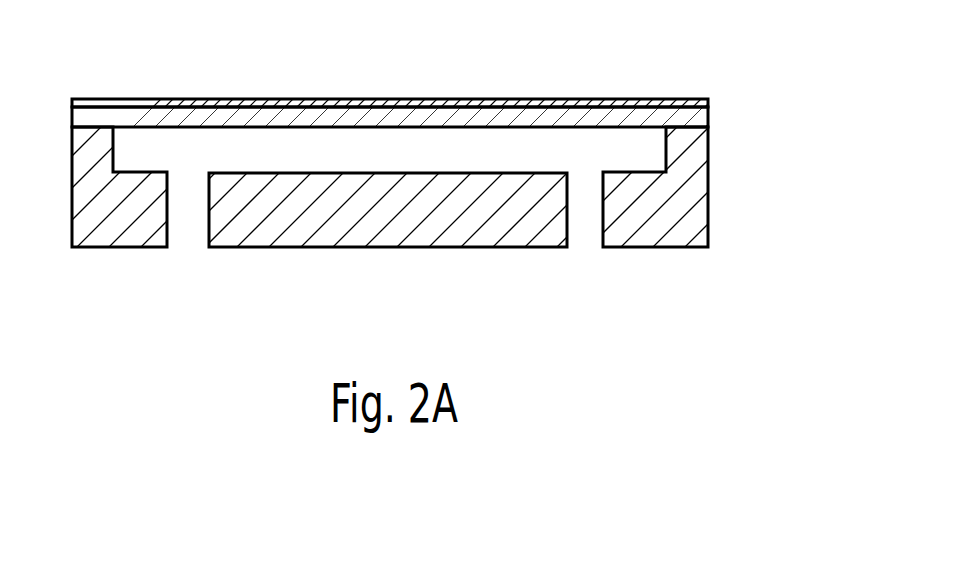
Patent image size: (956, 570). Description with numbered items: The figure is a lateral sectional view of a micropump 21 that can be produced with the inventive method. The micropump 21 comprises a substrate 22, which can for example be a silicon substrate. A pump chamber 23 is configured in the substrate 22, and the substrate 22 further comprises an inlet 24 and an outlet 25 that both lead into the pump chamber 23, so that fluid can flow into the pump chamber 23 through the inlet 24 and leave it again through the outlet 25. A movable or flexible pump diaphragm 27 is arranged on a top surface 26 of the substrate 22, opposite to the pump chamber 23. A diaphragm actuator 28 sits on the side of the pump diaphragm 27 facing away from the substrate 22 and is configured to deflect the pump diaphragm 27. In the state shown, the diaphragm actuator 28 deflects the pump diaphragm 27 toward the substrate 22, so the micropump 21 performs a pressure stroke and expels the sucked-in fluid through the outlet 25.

The micropump 21 is at (750, 125).
The substrate 22 is at (333, 216).
The pump chamber 23 is at (395, 165).
The inlet 24 is at (187, 229).
The outlet 25 is at (583, 229).
The top surface 26 is at (472, 150).
The pump diaphragm 27 is at (200, 117).
The diaphragm actuator 28 is at (273, 104).